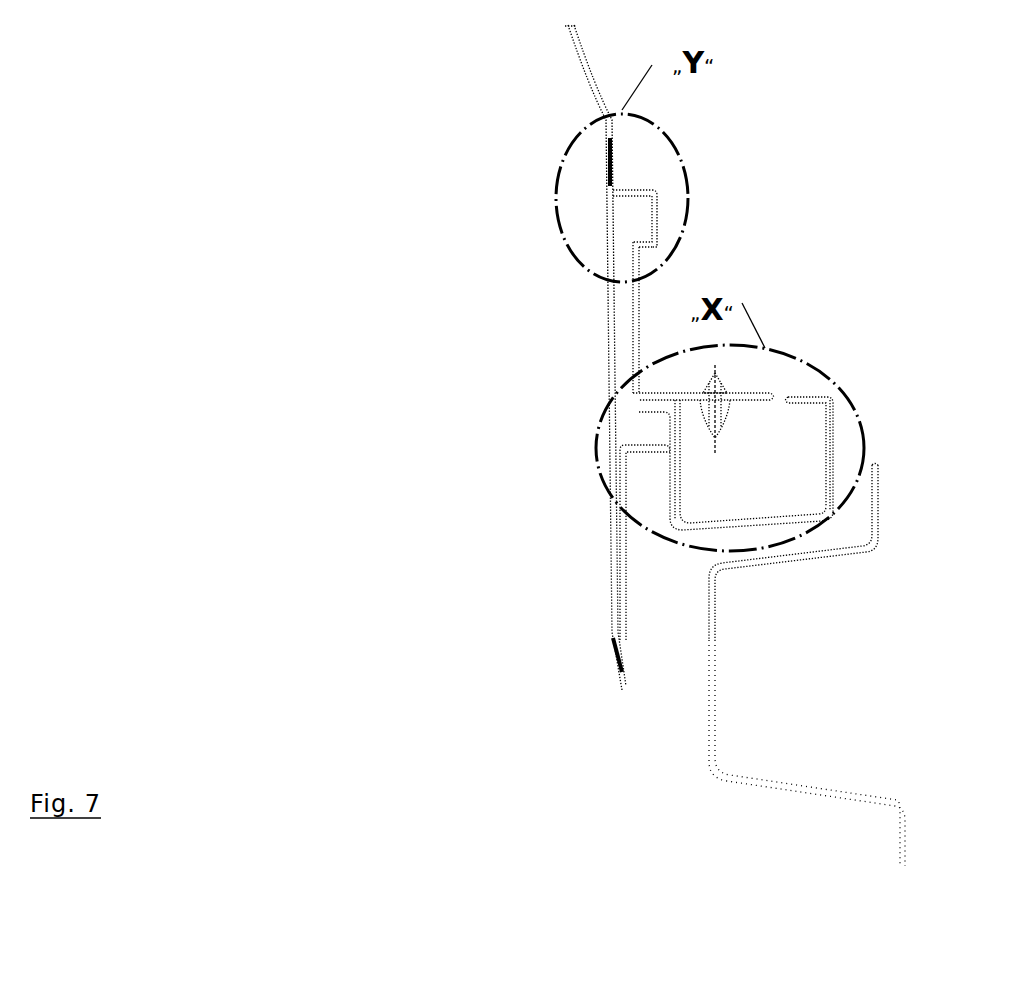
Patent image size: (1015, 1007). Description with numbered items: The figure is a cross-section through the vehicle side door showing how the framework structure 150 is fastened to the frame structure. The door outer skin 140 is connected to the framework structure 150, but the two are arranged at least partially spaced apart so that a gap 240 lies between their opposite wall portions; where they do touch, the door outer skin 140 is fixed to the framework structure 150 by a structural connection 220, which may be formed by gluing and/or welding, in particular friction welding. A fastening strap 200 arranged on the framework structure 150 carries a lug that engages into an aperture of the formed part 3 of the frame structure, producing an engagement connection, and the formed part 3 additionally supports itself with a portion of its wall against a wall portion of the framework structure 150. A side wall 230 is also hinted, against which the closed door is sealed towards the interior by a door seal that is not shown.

The formed part 3 is at (833, 425).
The door outer skin 140 is at (612, 325).
The framework structure 150 is at (657, 198).
The fastening strap 200 is at (752, 393).
The structural connection 220 is at (608, 170).
The side wall 230 is at (867, 542).
The gap 240 is at (622, 552).